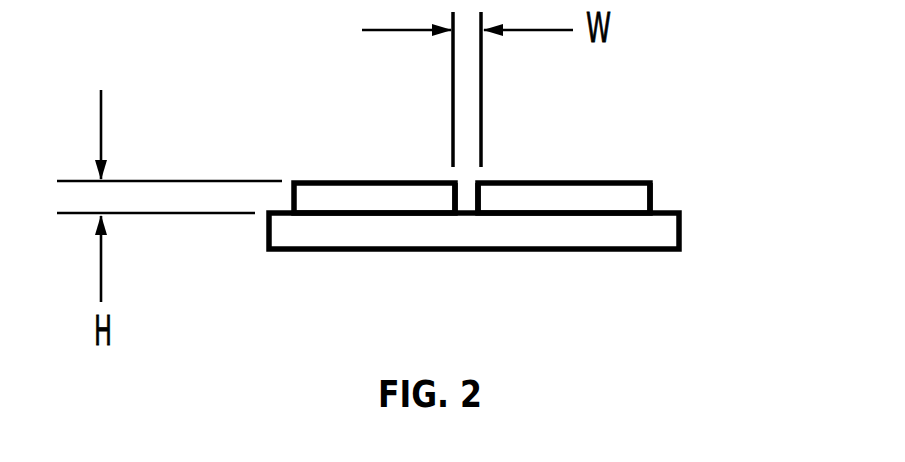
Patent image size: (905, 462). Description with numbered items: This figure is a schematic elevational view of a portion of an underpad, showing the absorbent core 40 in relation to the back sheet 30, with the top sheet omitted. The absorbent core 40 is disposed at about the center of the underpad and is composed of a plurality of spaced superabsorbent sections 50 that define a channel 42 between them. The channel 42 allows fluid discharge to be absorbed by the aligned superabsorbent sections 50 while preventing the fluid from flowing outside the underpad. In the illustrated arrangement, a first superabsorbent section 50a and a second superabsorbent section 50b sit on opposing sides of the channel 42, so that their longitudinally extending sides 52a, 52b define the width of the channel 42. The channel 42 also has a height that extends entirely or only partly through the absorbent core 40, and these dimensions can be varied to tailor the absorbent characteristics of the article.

The back sheet 30 is at (684, 226).
The absorbent core 40 is at (658, 196).
The channel 42 is at (467, 185).
The superabsorbent sections 50 is at (484, 137).
The first superabsorbent section 50a is at (342, 180).
The second superabsorbent section 50b is at (630, 193).
The longitudinally extending side 52a is at (455, 192).
The longitudinally extending side 52b is at (480, 174).